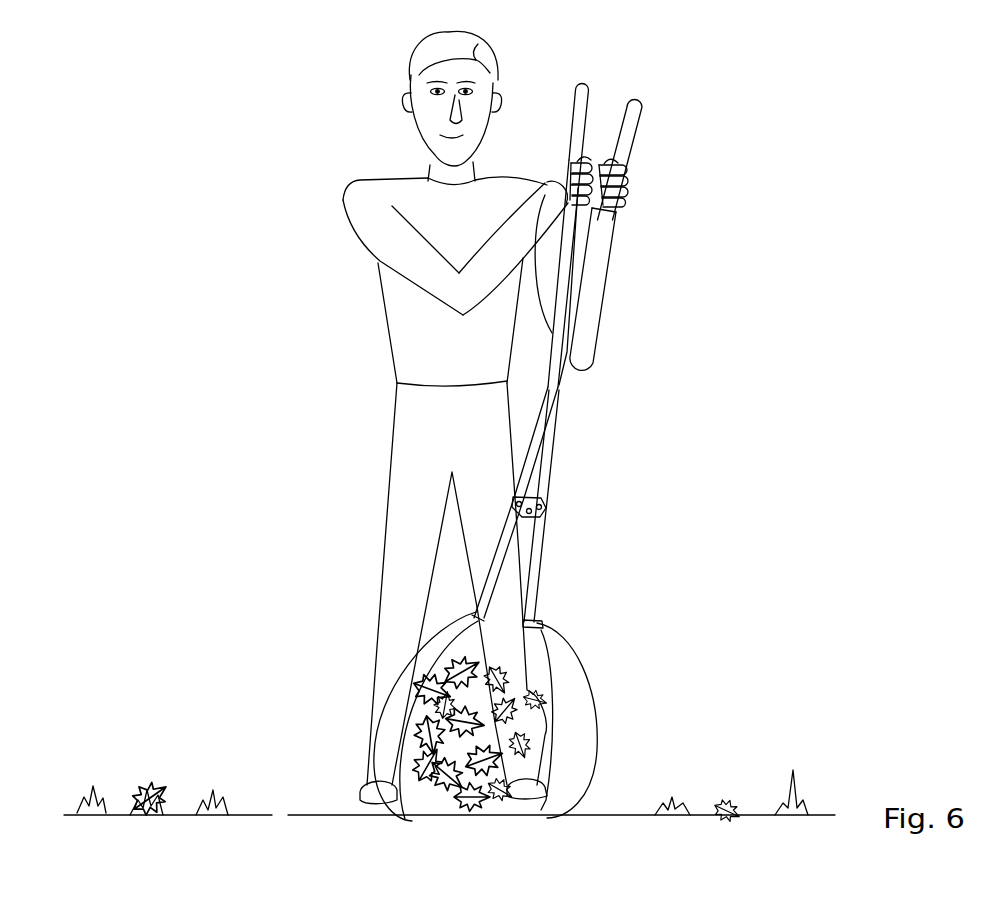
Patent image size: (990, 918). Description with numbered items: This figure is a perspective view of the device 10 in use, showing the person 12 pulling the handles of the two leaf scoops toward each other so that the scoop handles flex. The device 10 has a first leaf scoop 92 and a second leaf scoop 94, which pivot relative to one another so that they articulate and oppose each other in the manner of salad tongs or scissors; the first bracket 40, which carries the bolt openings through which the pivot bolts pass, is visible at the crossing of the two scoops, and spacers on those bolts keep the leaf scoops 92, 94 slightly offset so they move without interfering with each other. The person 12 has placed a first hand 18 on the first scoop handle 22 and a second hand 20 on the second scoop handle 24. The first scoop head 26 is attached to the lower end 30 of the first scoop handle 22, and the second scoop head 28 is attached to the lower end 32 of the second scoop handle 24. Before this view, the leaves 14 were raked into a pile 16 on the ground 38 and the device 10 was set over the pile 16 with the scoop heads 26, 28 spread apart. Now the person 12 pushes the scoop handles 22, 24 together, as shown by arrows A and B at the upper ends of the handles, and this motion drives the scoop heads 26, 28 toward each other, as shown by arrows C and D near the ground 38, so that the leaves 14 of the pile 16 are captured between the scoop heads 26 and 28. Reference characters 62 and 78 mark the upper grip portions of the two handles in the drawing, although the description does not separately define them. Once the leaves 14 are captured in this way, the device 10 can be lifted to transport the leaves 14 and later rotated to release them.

The device 10 is at (563, 373).
The person 12 is at (385, 190).
The leaves 14 is at (158, 790).
The pile 16 is at (503, 683).
The first hand 18 is at (629, 188).
The second hand 20 is at (567, 175).
The first scoop handle 22 is at (590, 268).
The second scoop handle 24 is at (555, 335).
The first scoop head 26 is at (410, 655).
The second scoop head 28 is at (573, 678).
The lower end 30 is at (478, 612).
The lower end 32 is at (540, 625).
The ground 38 is at (315, 854).
The first bracket 40 is at (542, 497).
The second handle grip 62 is at (640, 103).
The first handle grip 78 is at (581, 88).
The first leaf scoop 92 is at (505, 545).
The second leaf scoop 94 is at (543, 562).
The arrow A is at (643, 116).
The arrow B is at (577, 93).
The arrow C is at (413, 790).
The arrow D is at (498, 805).